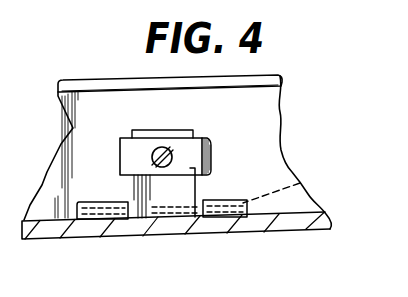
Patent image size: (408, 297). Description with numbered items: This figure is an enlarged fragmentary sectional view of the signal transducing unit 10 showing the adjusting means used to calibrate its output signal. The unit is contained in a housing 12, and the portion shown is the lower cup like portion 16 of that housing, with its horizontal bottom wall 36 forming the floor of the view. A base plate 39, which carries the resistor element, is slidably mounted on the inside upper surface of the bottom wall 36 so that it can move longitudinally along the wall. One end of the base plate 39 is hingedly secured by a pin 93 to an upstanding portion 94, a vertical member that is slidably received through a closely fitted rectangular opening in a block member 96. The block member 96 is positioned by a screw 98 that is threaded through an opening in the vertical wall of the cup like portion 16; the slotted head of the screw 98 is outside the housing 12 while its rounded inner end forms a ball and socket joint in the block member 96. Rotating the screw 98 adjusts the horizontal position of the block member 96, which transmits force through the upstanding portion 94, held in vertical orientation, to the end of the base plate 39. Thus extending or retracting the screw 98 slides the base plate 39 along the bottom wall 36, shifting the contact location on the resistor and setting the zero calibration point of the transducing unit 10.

The signal transducing unit 10 is at (72, 64).
The housing 12 is at (284, 230).
The lower cup like portion 16 is at (42, 239).
The bottom wall 36 is at (152, 222).
The base plate 39 is at (226, 219).
The pin 93 is at (300, 183).
The upstanding portion 94 is at (183, 189).
The block member 96 is at (210, 152).
The screw 98 is at (172, 147).